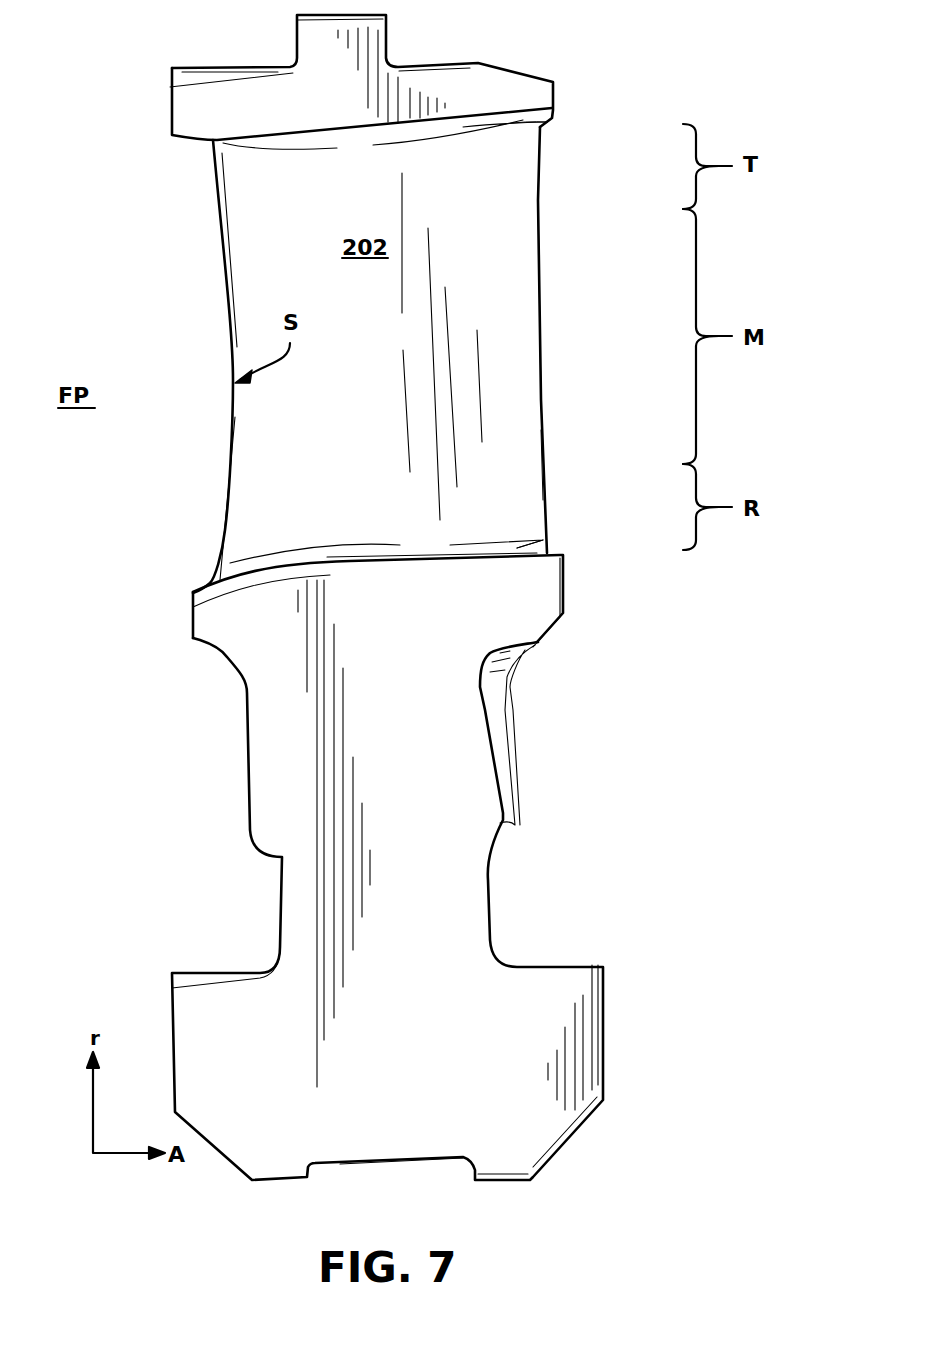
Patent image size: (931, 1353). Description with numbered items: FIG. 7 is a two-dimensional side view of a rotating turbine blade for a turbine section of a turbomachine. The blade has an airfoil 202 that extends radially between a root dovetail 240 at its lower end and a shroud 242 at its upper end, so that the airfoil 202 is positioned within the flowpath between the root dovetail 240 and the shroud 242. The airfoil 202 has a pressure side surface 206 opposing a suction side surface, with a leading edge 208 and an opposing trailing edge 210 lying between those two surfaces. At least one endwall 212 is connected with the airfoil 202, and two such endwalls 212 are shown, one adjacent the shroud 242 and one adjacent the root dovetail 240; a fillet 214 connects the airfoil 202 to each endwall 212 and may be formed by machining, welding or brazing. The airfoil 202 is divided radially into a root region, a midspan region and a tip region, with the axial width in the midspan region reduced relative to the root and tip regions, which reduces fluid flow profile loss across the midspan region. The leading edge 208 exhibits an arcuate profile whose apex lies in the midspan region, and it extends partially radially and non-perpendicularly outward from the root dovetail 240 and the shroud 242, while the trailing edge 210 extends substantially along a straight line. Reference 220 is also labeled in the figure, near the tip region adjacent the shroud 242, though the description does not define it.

The airfoil 202 is at (370, 360).
The pressure side surface 206 is at (513, 330).
The leading edge 208 is at (227, 447).
The trailing edge 210 is at (545, 464).
The endwall 212 is at (515, 92).
The fillet 214 is at (532, 535).
The tip region 220 is at (527, 117).
The root dovetail 240 is at (223, 640).
The shroud 242 is at (195, 112).